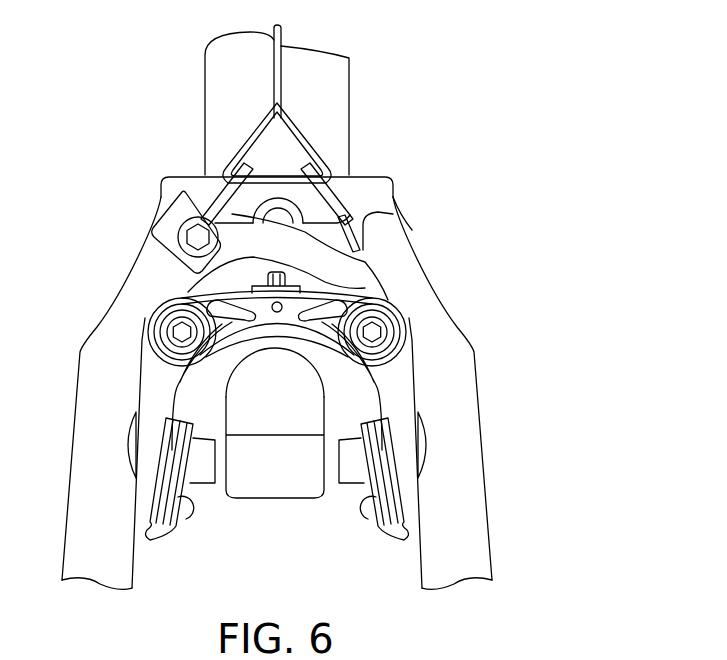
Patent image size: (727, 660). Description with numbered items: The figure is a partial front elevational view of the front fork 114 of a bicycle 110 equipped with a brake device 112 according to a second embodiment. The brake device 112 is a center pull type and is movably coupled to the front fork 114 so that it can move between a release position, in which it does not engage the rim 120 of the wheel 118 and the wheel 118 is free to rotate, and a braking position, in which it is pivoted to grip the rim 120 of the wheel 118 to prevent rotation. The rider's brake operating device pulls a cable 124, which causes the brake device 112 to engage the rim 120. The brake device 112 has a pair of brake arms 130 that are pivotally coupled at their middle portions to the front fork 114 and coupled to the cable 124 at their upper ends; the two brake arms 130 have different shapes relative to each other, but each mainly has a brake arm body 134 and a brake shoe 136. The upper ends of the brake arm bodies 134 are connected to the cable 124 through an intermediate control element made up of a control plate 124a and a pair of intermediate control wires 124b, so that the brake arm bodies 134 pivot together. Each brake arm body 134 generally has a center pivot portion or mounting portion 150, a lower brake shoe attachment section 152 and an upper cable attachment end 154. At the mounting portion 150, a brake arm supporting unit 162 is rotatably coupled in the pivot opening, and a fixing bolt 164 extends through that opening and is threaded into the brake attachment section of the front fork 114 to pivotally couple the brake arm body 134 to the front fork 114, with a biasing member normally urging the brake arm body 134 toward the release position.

The bicycle 110 is at (457, 277).
The brake device 112 is at (367, 277).
The front fork 114 is at (480, 427).
The wheel 118 is at (228, 378).
The rim 120 is at (283, 500).
The cable 124 is at (283, 40).
The control plate 124a is at (270, 148).
The intermediate control wires 124b is at (216, 176).
The brake arms 130 is at (422, 370).
The brake arm body 134 is at (400, 398).
The brake shoe 136 is at (207, 486).
The mounting portion 150 is at (155, 308).
The lower brake shoe attachment section 152 is at (410, 465).
The upper cable attachment end 154 is at (176, 219).
The brake arm supporting unit 162 is at (130, 324).
The fixing bolt 164 is at (314, 370).